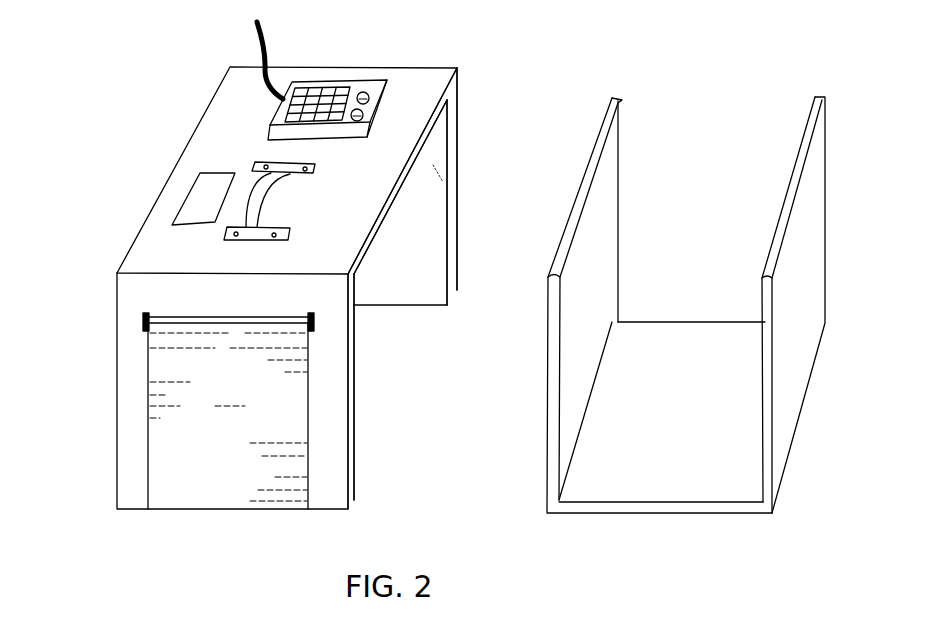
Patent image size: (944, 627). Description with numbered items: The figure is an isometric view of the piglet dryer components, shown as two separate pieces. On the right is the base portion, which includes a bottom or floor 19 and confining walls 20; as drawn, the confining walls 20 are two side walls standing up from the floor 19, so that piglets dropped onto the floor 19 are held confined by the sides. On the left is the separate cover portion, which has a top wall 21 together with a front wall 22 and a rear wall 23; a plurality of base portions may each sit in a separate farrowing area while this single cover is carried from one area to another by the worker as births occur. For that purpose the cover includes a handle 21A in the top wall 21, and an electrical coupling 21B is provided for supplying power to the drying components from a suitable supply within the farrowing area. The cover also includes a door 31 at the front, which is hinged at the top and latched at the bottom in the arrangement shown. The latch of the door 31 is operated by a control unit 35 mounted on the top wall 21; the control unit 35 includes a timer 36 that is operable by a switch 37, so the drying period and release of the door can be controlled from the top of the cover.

The floor 19 is at (630, 477).
The confining walls 20 is at (572, 330).
The top wall 21 is at (163, 252).
The handle 21A is at (237, 176).
The electrical coupling 21B is at (258, 50).
The front wall 22 is at (328, 408).
The rear wall 23 is at (415, 227).
The door 31 is at (190, 470).
The control unit 35 is at (371, 91).
The timer 36 is at (372, 82).
The switch 37 is at (364, 92).